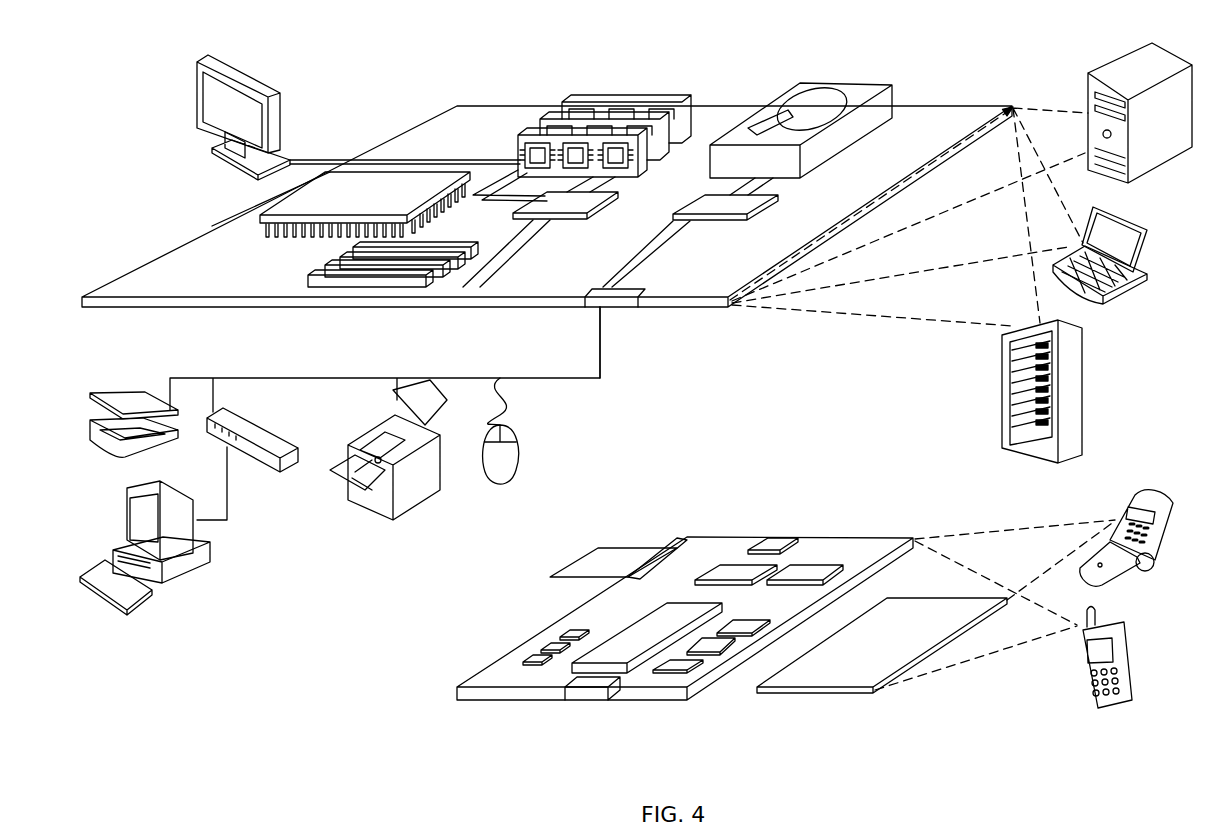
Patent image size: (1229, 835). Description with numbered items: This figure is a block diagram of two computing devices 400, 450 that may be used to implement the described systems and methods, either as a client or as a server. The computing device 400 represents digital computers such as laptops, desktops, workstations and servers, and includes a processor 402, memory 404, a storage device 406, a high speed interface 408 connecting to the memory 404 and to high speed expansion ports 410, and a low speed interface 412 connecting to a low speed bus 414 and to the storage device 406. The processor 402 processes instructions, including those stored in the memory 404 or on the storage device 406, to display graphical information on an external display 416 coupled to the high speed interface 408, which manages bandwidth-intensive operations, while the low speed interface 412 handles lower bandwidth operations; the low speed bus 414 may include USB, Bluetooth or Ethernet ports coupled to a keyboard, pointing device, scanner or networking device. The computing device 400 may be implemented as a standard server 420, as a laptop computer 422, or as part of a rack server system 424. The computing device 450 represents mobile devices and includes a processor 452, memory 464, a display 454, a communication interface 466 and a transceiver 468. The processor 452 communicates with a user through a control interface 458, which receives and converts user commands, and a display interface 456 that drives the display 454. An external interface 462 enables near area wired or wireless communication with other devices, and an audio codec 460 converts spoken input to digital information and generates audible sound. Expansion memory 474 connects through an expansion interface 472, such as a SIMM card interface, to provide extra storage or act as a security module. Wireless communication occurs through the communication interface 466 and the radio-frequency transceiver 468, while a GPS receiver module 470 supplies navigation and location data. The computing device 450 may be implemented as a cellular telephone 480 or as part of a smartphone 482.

The computing device 400 is at (380, 82).
The processor 402 is at (262, 215).
The memory 404 is at (575, 102).
The storage device 406 is at (797, 90).
The high speed interface 408 is at (543, 200).
The high speed expansion ports 410 is at (322, 270).
The low speed interface 412 is at (705, 200).
The low speed bus 414 is at (613, 297).
The display 416 is at (205, 58).
The standard server 420 is at (1090, 94).
The laptop computer 422 is at (1147, 231).
The rack server system 424 is at (1002, 415).
The computing device 450 is at (436, 697).
The processor 452 is at (622, 660).
The display 454 is at (843, 673).
The display interface 456 is at (685, 668).
The control interface 458 is at (712, 645).
The audio codec 460 is at (742, 625).
The external interface 462 is at (590, 687).
The memory 464 is at (540, 652).
The communication interface 466 is at (735, 570).
The transceiver 468 is at (805, 572).
The GPS receiver module 470 is at (780, 538).
The expansion interface 472 is at (670, 548).
The expansion memory 474 is at (598, 551).
The cellular telephone 480 is at (1118, 503).
The smartphone 482 is at (1088, 668).